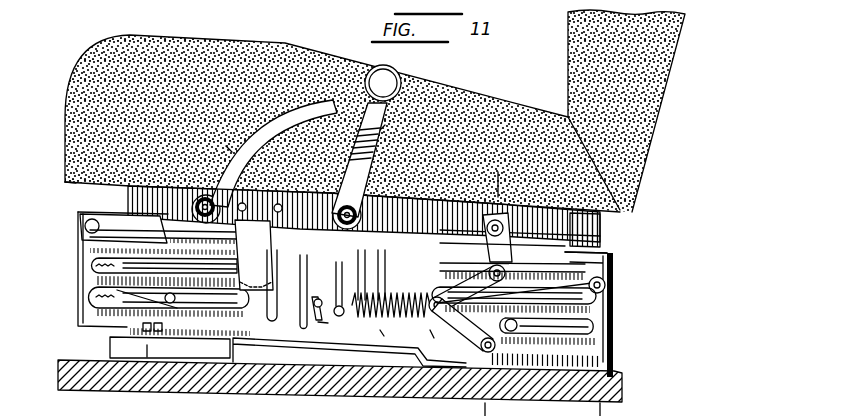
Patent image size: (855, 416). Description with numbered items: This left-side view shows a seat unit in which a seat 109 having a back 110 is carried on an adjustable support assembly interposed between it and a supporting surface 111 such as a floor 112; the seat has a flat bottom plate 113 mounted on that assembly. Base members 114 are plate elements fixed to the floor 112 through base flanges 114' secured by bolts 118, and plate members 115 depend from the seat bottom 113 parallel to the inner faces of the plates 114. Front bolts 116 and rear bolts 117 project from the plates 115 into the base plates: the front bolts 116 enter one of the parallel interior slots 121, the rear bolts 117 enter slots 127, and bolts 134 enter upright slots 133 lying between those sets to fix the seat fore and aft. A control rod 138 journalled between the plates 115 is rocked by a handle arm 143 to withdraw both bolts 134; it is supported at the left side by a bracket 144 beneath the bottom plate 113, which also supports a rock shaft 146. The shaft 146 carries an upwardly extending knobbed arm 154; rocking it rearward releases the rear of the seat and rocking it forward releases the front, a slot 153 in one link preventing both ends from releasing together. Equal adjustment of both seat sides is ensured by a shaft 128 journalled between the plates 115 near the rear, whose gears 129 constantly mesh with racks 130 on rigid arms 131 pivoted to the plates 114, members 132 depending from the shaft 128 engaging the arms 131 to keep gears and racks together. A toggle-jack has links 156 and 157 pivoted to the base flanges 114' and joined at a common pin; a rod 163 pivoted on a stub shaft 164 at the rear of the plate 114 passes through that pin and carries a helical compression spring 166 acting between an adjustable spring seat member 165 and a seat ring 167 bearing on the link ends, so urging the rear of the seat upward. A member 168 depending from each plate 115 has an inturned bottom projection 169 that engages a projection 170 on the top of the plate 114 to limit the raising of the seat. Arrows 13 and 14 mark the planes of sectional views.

The seat 109 is at (83, 67).
The back 110 is at (668, 75).
The flat bottom plate 113 is at (72, 184).
The radial arm 143 is at (230, 148).
The bracket 144 is at (200, 180).
The rock shaft 146 is at (359, 166).
The slot 153 is at (383, 83).
The arm 154 is at (385, 125).
The section line 13 is at (476, 173).
The base plate 14 is at (592, 232).
The control rod 138 is at (128, 199).
The seat-carried plate member 115 is at (124, 210).
The projection 170 is at (105, 217).
The rigid arm 131 is at (145, 234).
The base member 114 is at (71, 269).
The interior slot 121 is at (92, 262).
The front bolt 116 is at (177, 318).
The supporting surface 111 is at (77, 356).
The floor 112 is at (58, 380).
The base flange 114' is at (170, 347).
The bolt 118 is at (615, 358).
The inturned bottom projection 169 is at (268, 350).
The member 168 is at (254, 255).
The upright slot 133 is at (305, 291).
The helical compression spring 166 is at (410, 291).
The spring seat member 165 is at (306, 328).
The bolt 134 is at (380, 333).
The seat ring 167 is at (430, 333).
The member 132 is at (500, 252).
The link 157 is at (467, 289).
The link 156 is at (463, 325).
The rod 163 is at (613, 302).
The stub shaft 164 is at (610, 282).
The rack 130 is at (610, 272).
The slot 127 is at (600, 307).
The rear bolt 117 is at (603, 327).
The shaft 128 is at (565, 243).
The gear 129 is at (570, 252).